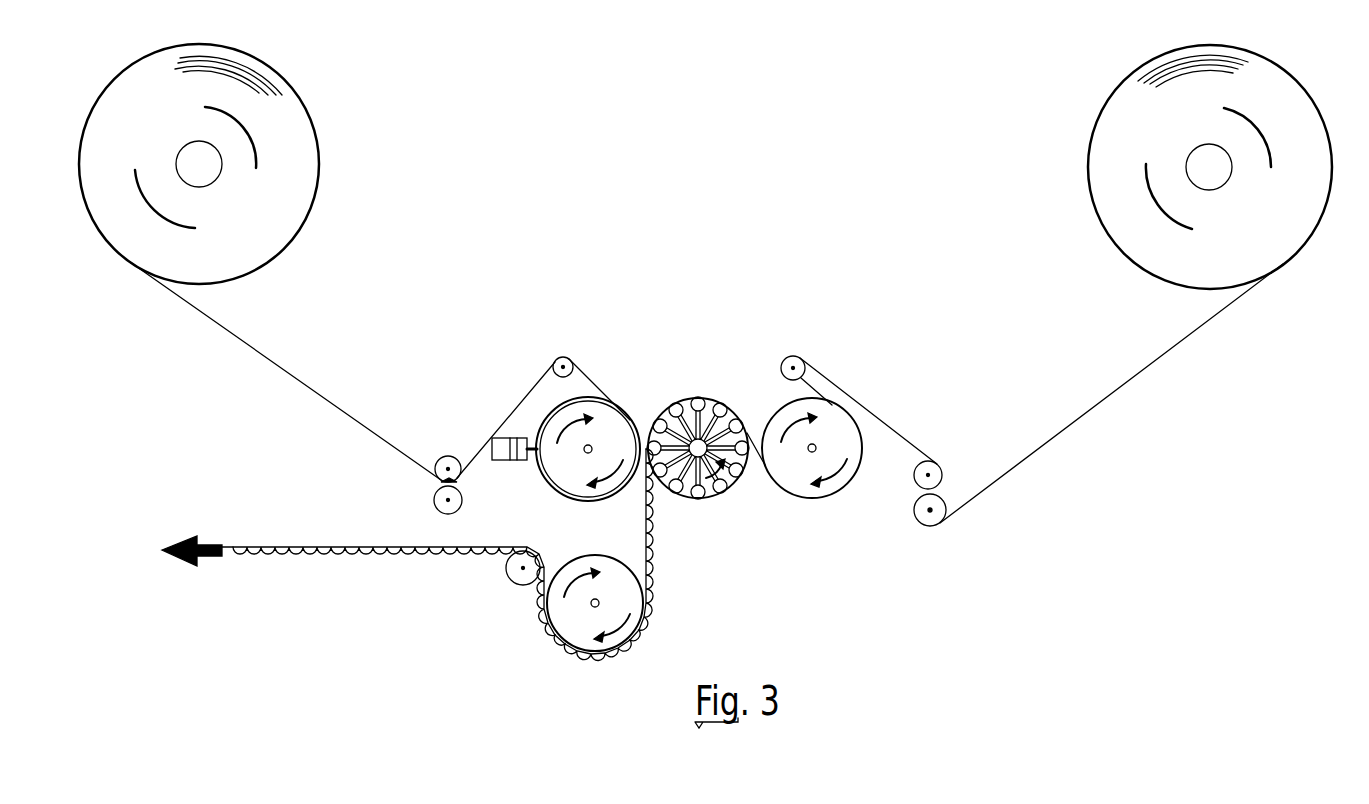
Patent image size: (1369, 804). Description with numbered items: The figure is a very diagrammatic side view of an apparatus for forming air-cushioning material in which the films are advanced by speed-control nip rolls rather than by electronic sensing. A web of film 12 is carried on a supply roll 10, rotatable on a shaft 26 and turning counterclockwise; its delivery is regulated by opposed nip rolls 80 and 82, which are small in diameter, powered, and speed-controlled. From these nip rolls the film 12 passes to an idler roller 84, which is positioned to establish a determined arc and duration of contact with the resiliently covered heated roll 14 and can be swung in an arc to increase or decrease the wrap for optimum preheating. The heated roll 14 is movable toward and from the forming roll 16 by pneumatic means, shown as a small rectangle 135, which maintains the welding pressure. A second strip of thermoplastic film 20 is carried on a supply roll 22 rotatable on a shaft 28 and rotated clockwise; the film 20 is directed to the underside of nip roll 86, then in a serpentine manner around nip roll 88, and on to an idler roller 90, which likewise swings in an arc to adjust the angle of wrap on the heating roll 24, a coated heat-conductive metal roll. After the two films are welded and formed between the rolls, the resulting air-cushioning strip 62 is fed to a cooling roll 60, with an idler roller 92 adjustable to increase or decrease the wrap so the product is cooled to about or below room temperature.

The supply roll 10 is at (300, 126).
The shaft means 26 is at (206, 172).
The web of film 12 is at (292, 368).
The supply roll 22 is at (1091, 150).
The shaft means 28 is at (1193, 167).
The strip of thermoplastic film 20 is at (1097, 402).
The nip roll 80 is at (450, 456).
The nip roll 82 is at (436, 496).
The idler roller 84 is at (558, 358).
The pressure cylinder 135 is at (508, 437).
The heated roll 14 is at (556, 463).
The forming roll 16 is at (712, 497).
The heated roll 24 is at (820, 498).
The idler roller 90 is at (805, 357).
The nip roll 88 is at (933, 467).
The nip roll 86 is at (941, 499).
The idler roller 92 is at (515, 583).
The cooling roll 60 is at (637, 637).
The air-cushioning strip 62 is at (472, 552).